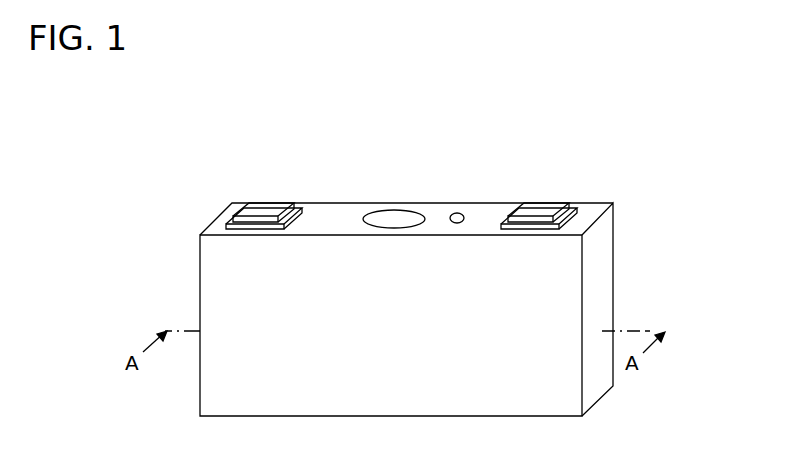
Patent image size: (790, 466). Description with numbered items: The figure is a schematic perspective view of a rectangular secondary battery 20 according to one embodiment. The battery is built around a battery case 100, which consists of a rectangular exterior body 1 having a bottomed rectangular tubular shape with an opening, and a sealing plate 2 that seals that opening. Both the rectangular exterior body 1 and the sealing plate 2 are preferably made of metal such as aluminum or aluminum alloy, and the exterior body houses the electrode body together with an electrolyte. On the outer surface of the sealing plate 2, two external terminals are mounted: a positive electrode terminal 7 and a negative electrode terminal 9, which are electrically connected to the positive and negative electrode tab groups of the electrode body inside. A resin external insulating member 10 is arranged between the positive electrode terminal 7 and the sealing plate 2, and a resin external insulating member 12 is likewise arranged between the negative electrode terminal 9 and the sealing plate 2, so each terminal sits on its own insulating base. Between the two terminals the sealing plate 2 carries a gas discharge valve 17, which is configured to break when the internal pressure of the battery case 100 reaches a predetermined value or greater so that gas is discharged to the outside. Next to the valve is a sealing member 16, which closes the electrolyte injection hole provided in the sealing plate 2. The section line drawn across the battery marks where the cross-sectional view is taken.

The rectangular exterior body 1 is at (603, 262).
The sealing plate 2 is at (588, 210).
The positive electrode terminal 7 is at (548, 212).
The negative electrode terminal 9 is at (270, 213).
The external insulating member 10 is at (544, 180).
The external insulating member 12 is at (270, 176).
The sealing member 16 is at (458, 213).
The gas discharge valve 17 is at (392, 227).
The rectangular secondary battery 20 is at (187, 208).
The battery case 100 is at (473, 270).